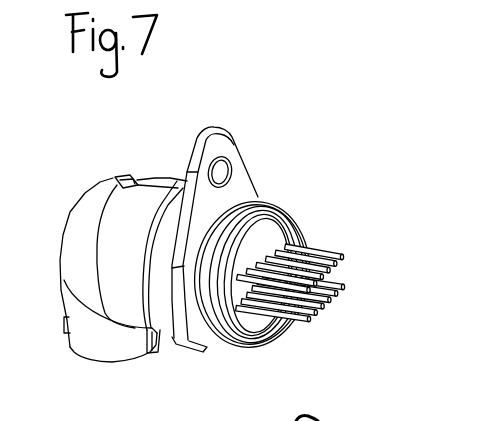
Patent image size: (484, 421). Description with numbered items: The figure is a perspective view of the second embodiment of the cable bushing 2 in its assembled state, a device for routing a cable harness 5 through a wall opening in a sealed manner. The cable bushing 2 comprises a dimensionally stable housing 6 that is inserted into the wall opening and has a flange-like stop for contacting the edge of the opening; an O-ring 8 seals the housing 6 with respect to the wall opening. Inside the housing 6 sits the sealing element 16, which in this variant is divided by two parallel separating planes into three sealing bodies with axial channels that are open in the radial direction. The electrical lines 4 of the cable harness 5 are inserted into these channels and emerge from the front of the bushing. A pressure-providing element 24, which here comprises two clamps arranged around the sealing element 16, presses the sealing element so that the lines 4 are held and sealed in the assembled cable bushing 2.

The cable bushing 2 is at (248, 68).
The pressure-providing element 24 is at (163, 232).
The housing 6 is at (224, 208).
The O-ring 8 is at (250, 203).
The sealing element 16 is at (297, 233).
The cable harness 5 is at (345, 232).
The electrical lines 4 is at (287, 325).